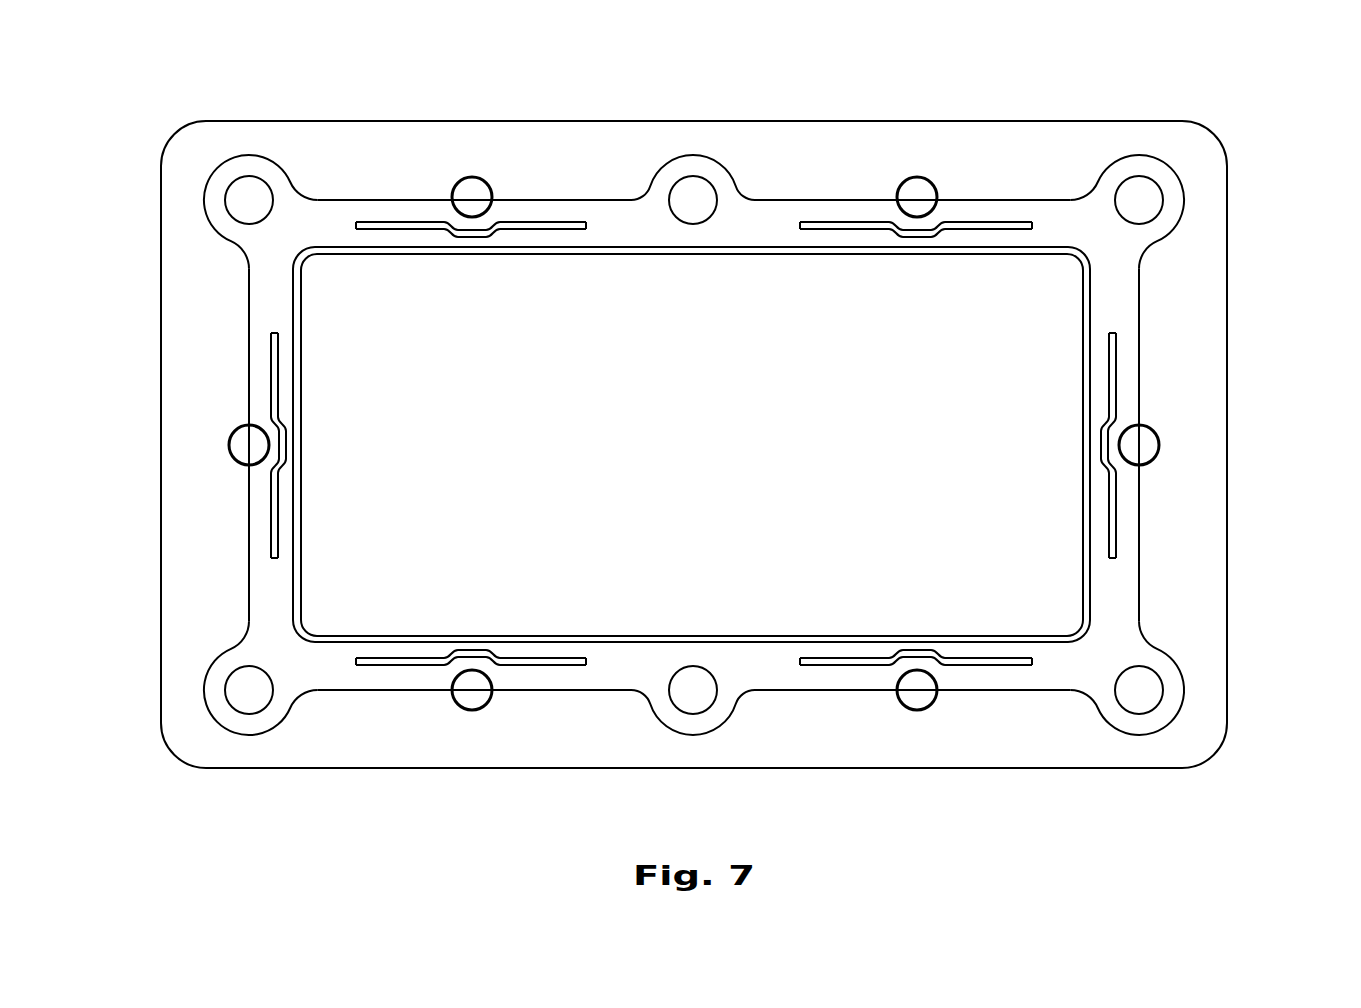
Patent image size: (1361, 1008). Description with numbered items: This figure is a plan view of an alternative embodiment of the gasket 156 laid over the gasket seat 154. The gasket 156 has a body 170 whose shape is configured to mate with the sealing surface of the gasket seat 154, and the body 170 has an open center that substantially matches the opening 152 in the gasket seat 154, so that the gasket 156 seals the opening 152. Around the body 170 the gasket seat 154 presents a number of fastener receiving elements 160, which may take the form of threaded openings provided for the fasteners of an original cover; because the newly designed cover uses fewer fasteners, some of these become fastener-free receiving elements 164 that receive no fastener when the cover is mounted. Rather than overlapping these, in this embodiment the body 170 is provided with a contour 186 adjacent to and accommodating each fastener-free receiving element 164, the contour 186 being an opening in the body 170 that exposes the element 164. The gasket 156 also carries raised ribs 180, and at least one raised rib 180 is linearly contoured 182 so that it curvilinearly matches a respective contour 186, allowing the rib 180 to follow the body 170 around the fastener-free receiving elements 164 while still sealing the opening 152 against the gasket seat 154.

The opening 152 is at (442, 388).
The gasket seat 154 is at (208, 382).
The gasket 156 is at (694, 397).
The fastener receiving elements 160 is at (687, 449).
The fastener-free receiving elements 164 is at (472, 187).
The body 170 is at (775, 213).
The raised ribs 180 is at (407, 223).
The linear contour 182 is at (470, 233).
The contour 186 is at (694, 441).